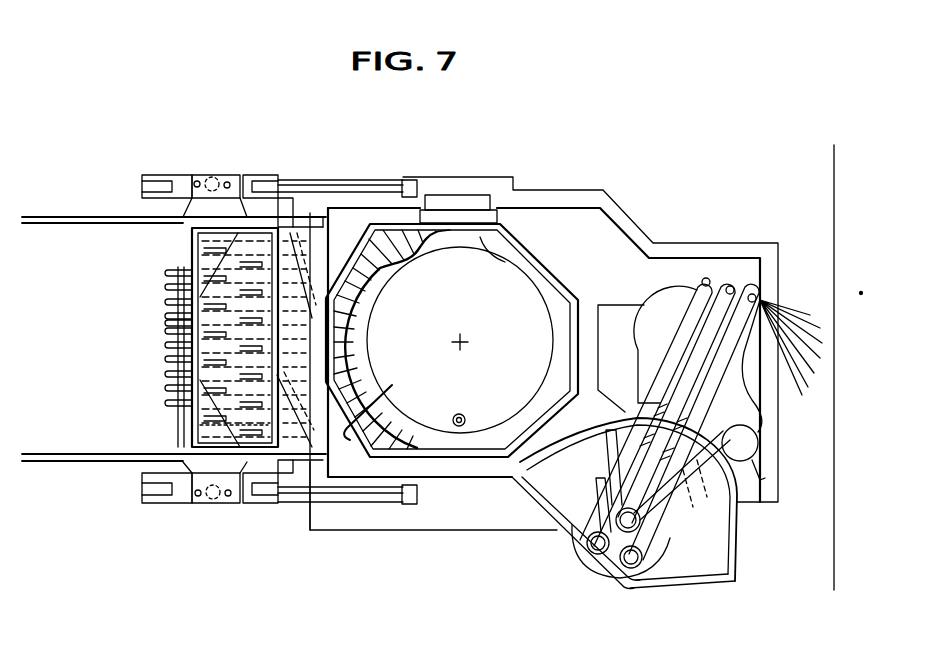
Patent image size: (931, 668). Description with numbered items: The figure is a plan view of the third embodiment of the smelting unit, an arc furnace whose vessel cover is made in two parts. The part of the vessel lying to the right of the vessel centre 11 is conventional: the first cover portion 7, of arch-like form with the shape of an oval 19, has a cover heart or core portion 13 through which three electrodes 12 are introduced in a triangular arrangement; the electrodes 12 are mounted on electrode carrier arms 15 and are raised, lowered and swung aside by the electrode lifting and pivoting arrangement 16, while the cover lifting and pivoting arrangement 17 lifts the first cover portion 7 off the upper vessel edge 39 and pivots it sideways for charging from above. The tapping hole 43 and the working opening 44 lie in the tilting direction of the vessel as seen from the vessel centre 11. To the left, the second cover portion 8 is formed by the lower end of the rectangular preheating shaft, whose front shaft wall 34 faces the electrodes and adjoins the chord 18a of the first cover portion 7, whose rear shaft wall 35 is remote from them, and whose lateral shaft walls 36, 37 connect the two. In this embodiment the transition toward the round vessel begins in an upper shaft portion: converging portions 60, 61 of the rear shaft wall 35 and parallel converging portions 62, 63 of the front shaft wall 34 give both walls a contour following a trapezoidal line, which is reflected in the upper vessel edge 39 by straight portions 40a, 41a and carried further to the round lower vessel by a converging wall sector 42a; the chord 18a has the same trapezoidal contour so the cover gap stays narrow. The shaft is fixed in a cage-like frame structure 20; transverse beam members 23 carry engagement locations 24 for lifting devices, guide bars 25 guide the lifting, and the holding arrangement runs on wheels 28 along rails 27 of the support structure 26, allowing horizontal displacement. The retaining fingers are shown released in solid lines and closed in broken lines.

The first cover portion 7 is at (700, 552).
The second cover portion 8 is at (158, 388).
The vessel centre 11 is at (466, 335).
The electrodes 12 is at (596, 556).
The cover heart or core portion 13 is at (638, 570).
The electrode carrier arms 15 is at (720, 385).
The electrode lifting and pivoting arrangement 16 is at (685, 300).
The cover lifting and pivoting arrangement 17 is at (745, 440).
The chord 18a is at (560, 550).
The oval 19 is at (736, 540).
The frame structure 20 is at (166, 281).
The transverse beam members 23 is at (283, 215).
The engagement locations 24 is at (212, 176).
The guide bars 25 is at (197, 178).
The support structure 26 is at (410, 180).
The rails 27 is at (385, 180).
The wheels 28 is at (155, 172).
The front shaft wall 34 is at (277, 363).
The rear shaft wall 35 is at (190, 325).
The lateral shaft wall 36 is at (190, 462).
The lateral shaft wall 37 is at (240, 232).
The upper vessel edge 39 is at (560, 290).
The straight portion 40a is at (327, 337).
The straight portion 41a is at (360, 233).
The converging wall sector 42a is at (357, 288).
The tapping hole 43 is at (459, 414).
The working opening 44 is at (473, 200).
The converging portion of the rear shaft wall 60 is at (200, 430).
The converging portion of the rear shaft wall 61 is at (208, 263).
The converging portion of the front shaft wall 62 is at (310, 462).
The converging portion of the front shaft wall 63 is at (308, 225).